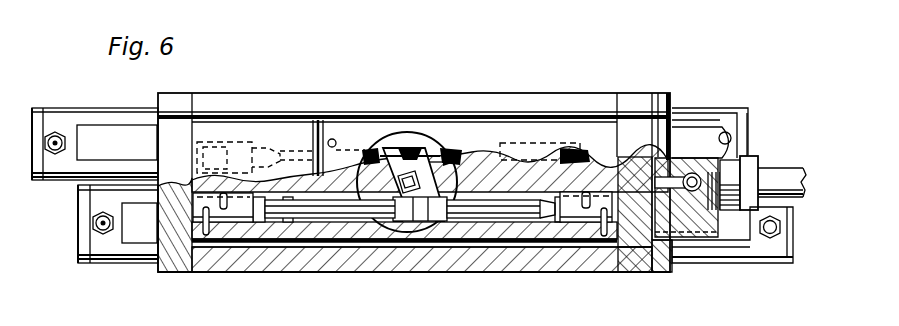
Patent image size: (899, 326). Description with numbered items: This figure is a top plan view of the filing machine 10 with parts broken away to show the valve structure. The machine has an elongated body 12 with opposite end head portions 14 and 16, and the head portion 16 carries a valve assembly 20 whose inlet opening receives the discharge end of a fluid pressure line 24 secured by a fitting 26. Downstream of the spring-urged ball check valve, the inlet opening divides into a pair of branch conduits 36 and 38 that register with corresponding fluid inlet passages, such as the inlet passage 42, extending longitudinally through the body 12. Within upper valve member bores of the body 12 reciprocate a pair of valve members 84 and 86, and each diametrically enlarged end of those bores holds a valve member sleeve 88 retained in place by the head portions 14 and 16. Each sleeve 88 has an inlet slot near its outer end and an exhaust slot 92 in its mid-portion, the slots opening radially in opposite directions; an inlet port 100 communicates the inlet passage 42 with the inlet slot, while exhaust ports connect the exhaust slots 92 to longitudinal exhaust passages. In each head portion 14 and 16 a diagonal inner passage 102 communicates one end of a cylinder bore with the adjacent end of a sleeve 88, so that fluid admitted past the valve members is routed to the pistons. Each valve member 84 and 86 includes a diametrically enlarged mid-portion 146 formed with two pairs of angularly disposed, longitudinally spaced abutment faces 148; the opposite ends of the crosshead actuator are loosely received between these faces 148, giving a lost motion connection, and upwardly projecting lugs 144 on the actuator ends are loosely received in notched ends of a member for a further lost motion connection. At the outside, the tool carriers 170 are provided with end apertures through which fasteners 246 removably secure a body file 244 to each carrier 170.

The filing machine 10 is at (374, 91).
The elongated body 12 is at (530, 91).
The head portion 14 is at (186, 91).
The head portion 16 is at (645, 91).
The valve assembly 20 is at (719, 125).
The fluid pressure line 24 is at (770, 168).
The fitting 26 is at (752, 158).
The branch conduit 36 is at (630, 248).
The branch conduit 38 is at (648, 125).
The fluid inlet passage 42 is at (540, 246).
The valve member 84 is at (440, 170).
The valve member 86 is at (335, 210).
The valve member sleeve 88 is at (234, 222).
The exhaust slot 92 is at (575, 190).
The inlet port 100 is at (206, 224).
The inner passage 102 is at (624, 262).
The lug 144 is at (424, 132).
The diametrically enlarged mid-portion 146 is at (413, 212).
The abutment face 148 is at (368, 155).
The tool carrier 170 is at (123, 110).
The body file 244 is at (36, 107).
The fastener 246 is at (60, 134).